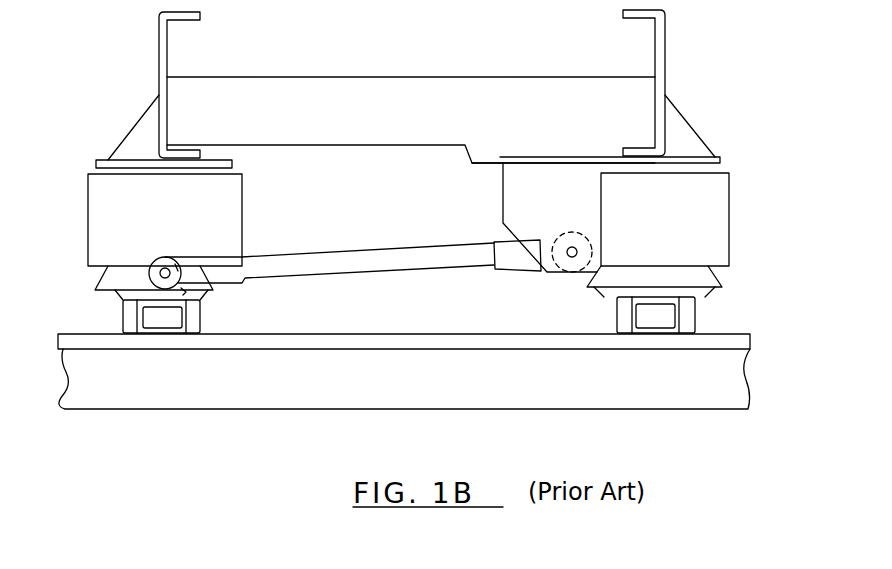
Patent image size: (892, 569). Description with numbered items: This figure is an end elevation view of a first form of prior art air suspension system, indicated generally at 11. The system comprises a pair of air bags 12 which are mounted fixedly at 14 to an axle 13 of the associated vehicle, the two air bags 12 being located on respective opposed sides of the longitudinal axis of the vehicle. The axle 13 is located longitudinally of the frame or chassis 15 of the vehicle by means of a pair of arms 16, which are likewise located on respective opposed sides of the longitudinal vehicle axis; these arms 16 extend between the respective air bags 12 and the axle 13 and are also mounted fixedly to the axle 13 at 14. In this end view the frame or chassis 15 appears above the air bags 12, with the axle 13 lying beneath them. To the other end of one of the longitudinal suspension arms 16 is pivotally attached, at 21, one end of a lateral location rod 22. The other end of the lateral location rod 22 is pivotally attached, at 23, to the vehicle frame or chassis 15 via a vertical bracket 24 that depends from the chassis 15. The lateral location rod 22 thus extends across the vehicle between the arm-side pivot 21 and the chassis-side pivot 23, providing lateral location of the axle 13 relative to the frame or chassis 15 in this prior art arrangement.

The air suspension system 11 is at (312, 437).
The air bag 12 is at (215, 212).
The axle 13 is at (527, 395).
The fixed mounting 14 is at (128, 318).
The frame or chassis 15 is at (420, 124).
The arm 16 is at (155, 323).
The pivotal attachment 21 is at (150, 262).
The lateral location rod 22 is at (368, 256).
The pivotal attachment 23 is at (510, 274).
The vertical bracket 24 is at (535, 195).